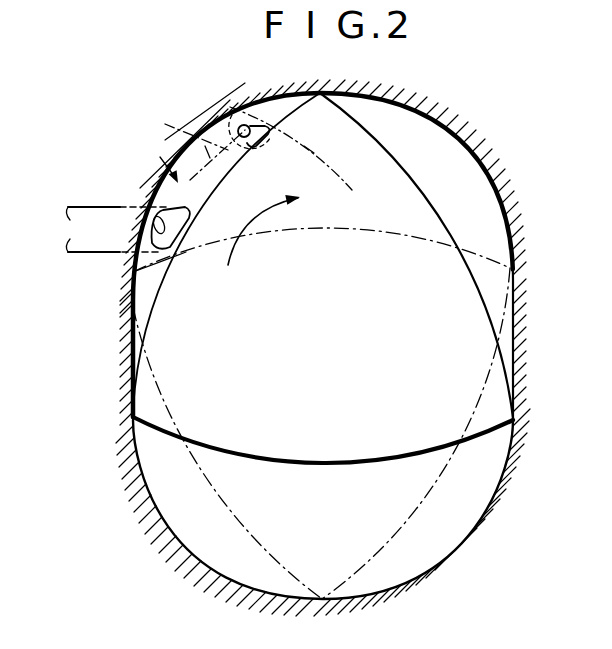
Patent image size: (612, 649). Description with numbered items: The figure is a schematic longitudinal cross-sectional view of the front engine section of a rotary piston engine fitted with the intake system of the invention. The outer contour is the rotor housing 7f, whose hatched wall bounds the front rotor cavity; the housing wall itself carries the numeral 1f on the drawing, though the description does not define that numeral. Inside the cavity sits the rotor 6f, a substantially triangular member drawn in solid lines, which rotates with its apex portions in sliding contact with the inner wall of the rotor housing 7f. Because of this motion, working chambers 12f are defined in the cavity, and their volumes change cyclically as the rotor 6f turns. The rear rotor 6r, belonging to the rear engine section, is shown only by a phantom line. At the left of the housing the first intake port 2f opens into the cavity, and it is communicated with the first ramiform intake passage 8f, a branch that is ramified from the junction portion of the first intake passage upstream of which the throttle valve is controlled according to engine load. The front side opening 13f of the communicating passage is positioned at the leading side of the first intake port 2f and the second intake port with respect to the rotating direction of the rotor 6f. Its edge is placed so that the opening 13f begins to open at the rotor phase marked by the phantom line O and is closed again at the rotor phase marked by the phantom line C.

The front housing wall 1f is at (481, 216).
The rotor housing 7f is at (484, 170).
The rotor 6f is at (455, 113).
The rotor 6r is at (437, 478).
The first intake port 2f is at (158, 207).
The front side opening of the communicating passage 13f is at (240, 124).
The working chamber 12f is at (165, 163).
The first ramiform intake passage 8f is at (86, 253).
The phantom line O is at (170, 129).
The phantom line C is at (335, 176).